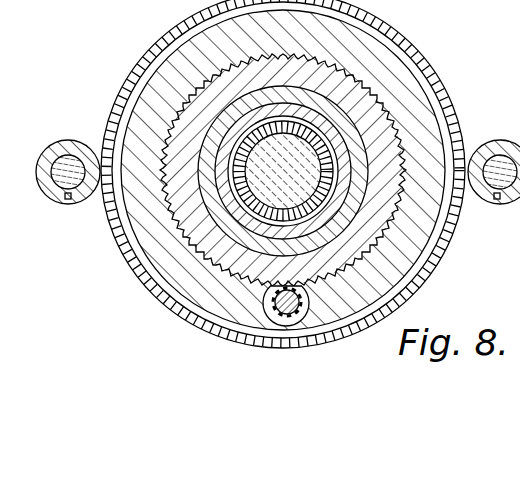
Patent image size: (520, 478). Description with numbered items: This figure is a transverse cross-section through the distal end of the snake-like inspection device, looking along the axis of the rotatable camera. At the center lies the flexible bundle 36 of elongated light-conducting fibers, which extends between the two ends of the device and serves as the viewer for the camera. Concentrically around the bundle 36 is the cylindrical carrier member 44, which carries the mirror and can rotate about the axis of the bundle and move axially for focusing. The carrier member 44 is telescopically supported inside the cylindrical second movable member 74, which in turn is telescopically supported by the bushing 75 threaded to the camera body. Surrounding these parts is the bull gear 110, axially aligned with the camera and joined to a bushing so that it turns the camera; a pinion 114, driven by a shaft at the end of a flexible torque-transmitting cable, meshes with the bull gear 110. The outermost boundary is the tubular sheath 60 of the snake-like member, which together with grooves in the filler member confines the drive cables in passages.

The flexible bundle of light-conducting fibers 36 is at (345, 90).
The carrier member 44 is at (337, 153).
The tubular sheath 60 is at (145, 73).
The second movable member 74 is at (350, 193).
The bushing 75 is at (343, 221).
The bull gear 110 is at (215, 297).
The pinion 114 is at (347, 230).